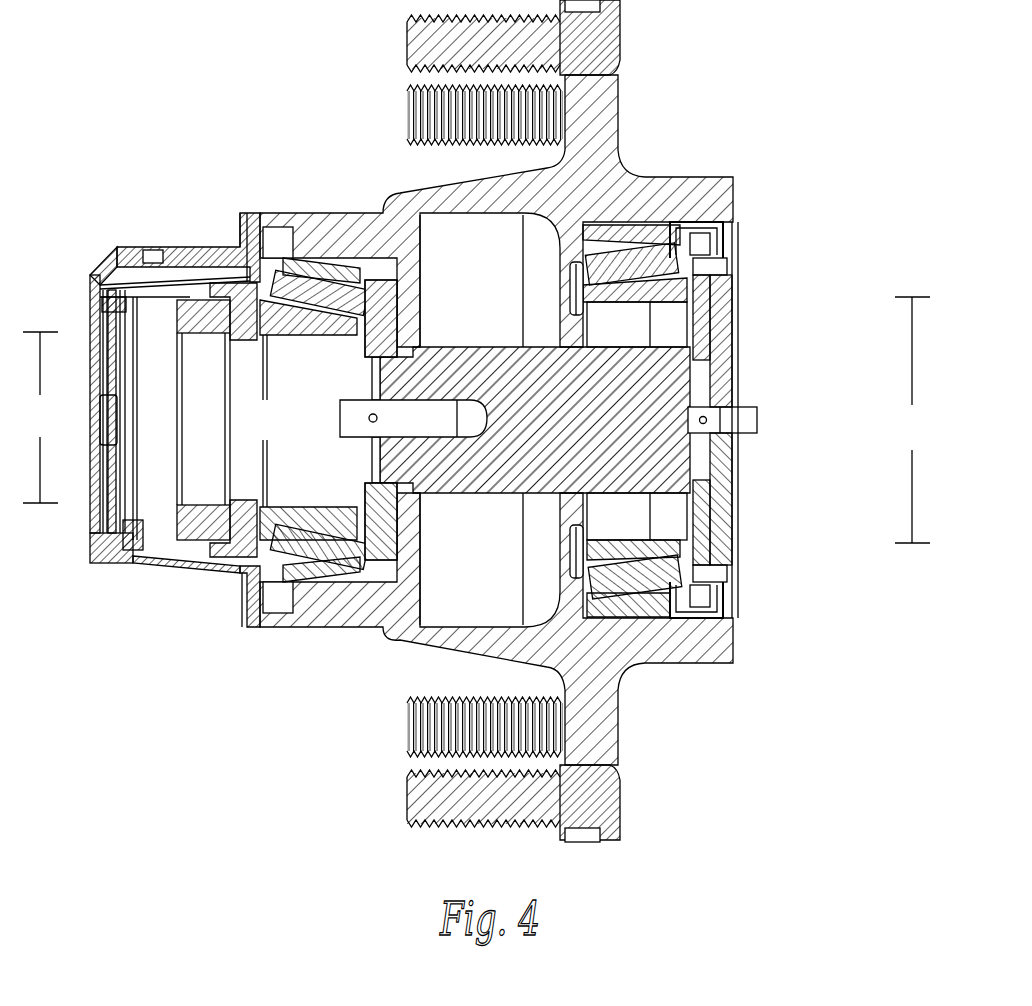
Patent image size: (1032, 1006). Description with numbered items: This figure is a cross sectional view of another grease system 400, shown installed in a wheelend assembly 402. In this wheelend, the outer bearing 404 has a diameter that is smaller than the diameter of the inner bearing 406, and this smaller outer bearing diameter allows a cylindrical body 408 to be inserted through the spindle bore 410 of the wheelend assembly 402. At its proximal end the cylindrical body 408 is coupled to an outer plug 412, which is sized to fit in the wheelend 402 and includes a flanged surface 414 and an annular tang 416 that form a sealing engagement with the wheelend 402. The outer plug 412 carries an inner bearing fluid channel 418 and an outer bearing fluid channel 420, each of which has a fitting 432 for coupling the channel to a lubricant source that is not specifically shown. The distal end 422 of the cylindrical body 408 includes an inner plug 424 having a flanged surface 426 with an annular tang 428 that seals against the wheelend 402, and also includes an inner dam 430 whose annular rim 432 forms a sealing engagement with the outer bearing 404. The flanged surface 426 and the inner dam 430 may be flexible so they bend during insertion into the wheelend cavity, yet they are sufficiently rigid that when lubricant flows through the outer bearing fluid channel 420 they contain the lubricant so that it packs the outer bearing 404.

The grease system 400 is at (476, 421).
The wheelend assembly 402 is at (598, 133).
The outer bearing 404 is at (290, 247).
The inner bearing 406 is at (672, 205).
The cylindrical body 408 is at (583, 421).
The spindle bore 410 is at (784, 411).
The outer plug 412 is at (730, 282).
The flanged surface 414 is at (692, 548).
The annular tang 416 is at (700, 622).
The inner bearing fluid channel 418 is at (732, 368).
The outer bearing fluid channel 420 is at (443, 424).
The distal end 422 is at (340, 400).
The inner plug 424 is at (436, 397).
The flanged surface 426 is at (330, 263).
The annular tang 428 is at (280, 623).
The inner dam 430 is at (350, 617).
The annular rim 432 is at (378, 270).